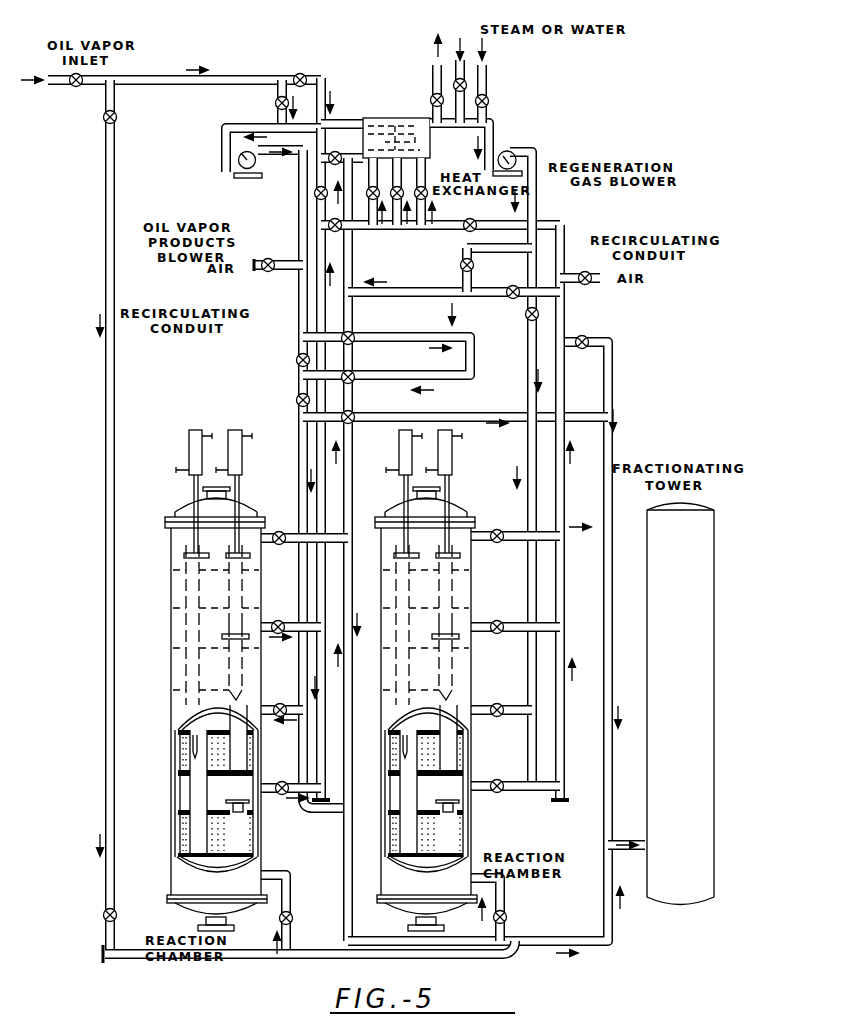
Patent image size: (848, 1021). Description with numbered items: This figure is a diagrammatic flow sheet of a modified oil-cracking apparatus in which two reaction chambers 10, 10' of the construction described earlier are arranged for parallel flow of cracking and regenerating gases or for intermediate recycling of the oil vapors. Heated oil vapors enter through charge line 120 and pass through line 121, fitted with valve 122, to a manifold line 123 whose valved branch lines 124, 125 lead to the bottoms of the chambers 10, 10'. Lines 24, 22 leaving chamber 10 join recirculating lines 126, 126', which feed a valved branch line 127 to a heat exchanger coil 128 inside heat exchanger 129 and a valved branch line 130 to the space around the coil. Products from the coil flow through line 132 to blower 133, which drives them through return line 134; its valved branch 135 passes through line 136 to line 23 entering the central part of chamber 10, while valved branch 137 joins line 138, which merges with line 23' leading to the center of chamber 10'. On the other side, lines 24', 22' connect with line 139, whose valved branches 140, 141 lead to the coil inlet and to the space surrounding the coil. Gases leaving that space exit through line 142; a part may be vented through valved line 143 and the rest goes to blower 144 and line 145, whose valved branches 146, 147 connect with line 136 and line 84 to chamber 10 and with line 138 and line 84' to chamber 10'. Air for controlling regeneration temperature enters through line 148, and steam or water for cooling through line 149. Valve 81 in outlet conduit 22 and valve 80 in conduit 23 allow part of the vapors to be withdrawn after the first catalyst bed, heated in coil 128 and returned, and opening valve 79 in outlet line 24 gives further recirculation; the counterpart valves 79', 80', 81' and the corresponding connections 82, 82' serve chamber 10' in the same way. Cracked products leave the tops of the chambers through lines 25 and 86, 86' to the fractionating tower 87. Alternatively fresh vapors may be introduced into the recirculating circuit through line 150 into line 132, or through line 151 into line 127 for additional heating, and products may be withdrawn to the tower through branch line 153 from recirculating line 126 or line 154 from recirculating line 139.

The reaction chamber 10 is at (197, 680).
The reaction chamber 10' is at (414, 680).
The outlet conduit 22 is at (291, 772).
The line 22' is at (515, 771).
The conduit 23 is at (282, 690).
The line 23' is at (501, 689).
The outlet line 24 is at (291, 607).
The line 24' is at (515, 607).
The line 25 is at (276, 530).
The valve 79 is at (280, 648).
The valve 79' is at (502, 646).
The valve 80 is at (282, 730).
The valve 80' is at (508, 728).
The valve 81 is at (286, 807).
The valve 81' is at (504, 805).
The conduit 82 is at (304, 562).
The conduit 82' is at (515, 558).
The line 84 is at (281, 470).
The line 84' is at (500, 470).
The line 86 is at (349, 549).
The line 86' is at (547, 512).
The fractionating tower 87 is at (716, 688).
The charge line 120 is at (52, 82).
The line 121 is at (112, 230).
The valve 122 is at (116, 122).
The manifold line 123 is at (122, 960).
The valved branch line 124 is at (290, 893).
The valved branch line 125 is at (503, 898).
The recirculating line 126 is at (322, 774).
The line 126' is at (274, 205).
The valved branch line 127 is at (347, 145).
The heat exchanger coil 128 is at (387, 128).
The heat exchanger 129 is at (334, 114).
The valved branch line 130 is at (362, 229).
The line 132 is at (222, 127).
The blower 133 is at (245, 180).
The return line 134 is at (298, 292).
The valved branch line 135 is at (296, 352).
The line 136 is at (296, 395).
The valved branch line 137 is at (352, 340).
The line 138 is at (527, 378).
The recirculating line 139 is at (545, 410).
The valved branch line 140 is at (510, 290).
The valved branch line 141 is at (465, 222).
The line 142 is at (430, 100).
The valved line 143 is at (411, 81).
The blower 144 is at (512, 152).
The line 145 is at (537, 208).
The valved branch line 146 is at (460, 270).
The valved branch line 147 is at (525, 316).
The line 148 is at (490, 103).
The line 149 is at (467, 72).
The line 150 is at (276, 104).
The line 151 is at (325, 60).
The branch line 153 is at (332, 426).
The line 154 is at (596, 326).